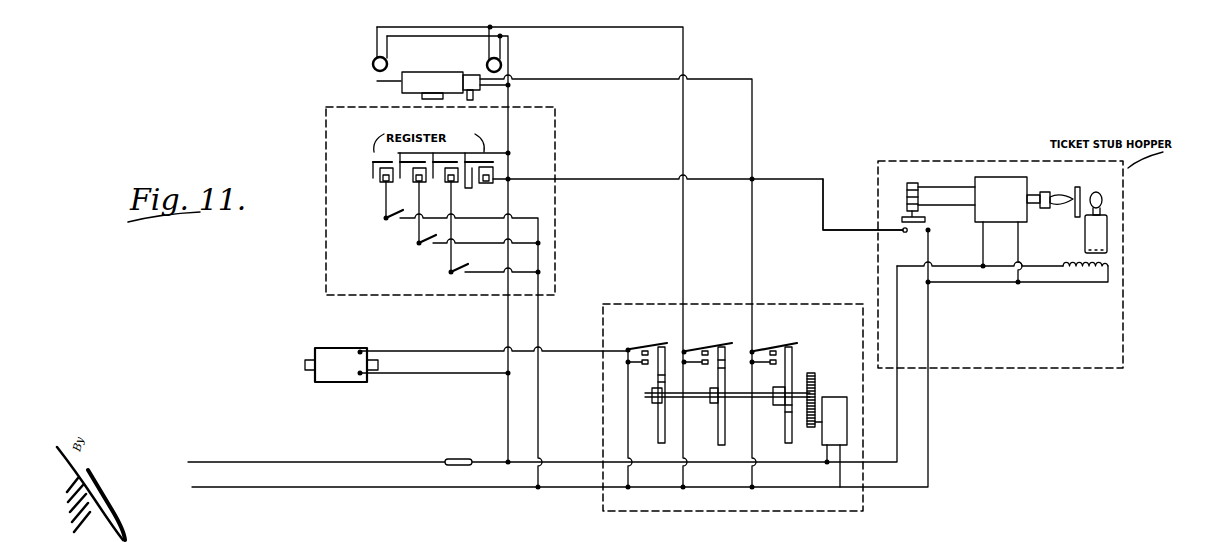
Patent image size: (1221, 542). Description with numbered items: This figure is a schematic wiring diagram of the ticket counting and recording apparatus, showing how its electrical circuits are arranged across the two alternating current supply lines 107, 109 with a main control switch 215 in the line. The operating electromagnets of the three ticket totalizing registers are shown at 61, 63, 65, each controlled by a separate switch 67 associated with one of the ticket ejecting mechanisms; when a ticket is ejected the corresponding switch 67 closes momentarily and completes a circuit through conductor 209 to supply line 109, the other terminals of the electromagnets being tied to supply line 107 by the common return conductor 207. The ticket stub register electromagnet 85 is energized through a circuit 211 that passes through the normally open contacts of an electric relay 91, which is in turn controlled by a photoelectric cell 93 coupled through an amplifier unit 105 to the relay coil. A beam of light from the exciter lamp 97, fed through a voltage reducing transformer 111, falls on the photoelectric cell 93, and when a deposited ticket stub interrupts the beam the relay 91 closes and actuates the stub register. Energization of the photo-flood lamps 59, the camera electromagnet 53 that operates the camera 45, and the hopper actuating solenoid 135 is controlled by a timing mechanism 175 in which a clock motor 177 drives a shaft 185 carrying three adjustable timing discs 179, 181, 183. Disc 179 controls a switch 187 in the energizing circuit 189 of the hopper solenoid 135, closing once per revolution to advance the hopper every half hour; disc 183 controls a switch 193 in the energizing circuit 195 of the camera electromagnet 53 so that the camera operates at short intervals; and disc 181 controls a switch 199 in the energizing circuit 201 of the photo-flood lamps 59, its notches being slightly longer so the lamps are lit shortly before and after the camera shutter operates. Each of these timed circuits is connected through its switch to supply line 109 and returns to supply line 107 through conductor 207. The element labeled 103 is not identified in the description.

The camera 45 is at (416, 78).
The camera electromagnet 53 is at (470, 75).
The photo-flood lamps 59 is at (372, 64).
The ticket register electromagnet 61 is at (376, 181).
The ticket register electromagnet 63 is at (421, 183).
The ticket register electromagnet 65 is at (452, 183).
The ticket stub register electromagnet 85 is at (486, 183).
The switch 67 is at (395, 222).
The electric relay 91 is at (903, 214).
The photoelectric cell 93 is at (1067, 193).
The exciter lamp 97 is at (1104, 200).
The plate 103 is at (1077, 217).
The amplifier unit 105 is at (1002, 192).
The supply line 107 is at (236, 452).
The supply line 109 is at (233, 488).
The voltage reducing transformer 111 is at (1110, 256).
The hopper actuating solenoid 135 is at (343, 385).
The timing mechanism 175 is at (767, 512).
The clock motor 177 is at (838, 397).
The timing disc 179 is at (658, 417).
The timing disc 181 is at (718, 380).
The timing disc 183 is at (785, 412).
The shaft 185 is at (645, 398).
The switch 187 is at (637, 348).
The energizing circuit 189 is at (460, 351).
The switch 193 is at (762, 350).
The energizing circuit 195 is at (753, 267).
The switch 199 is at (697, 350).
The energizing circuit 201 is at (684, 157).
The common return conductor 207 is at (508, 410).
The conductor 209 is at (539, 326).
The circuit 211 is at (806, 179).
The main control switch 215 is at (459, 459).